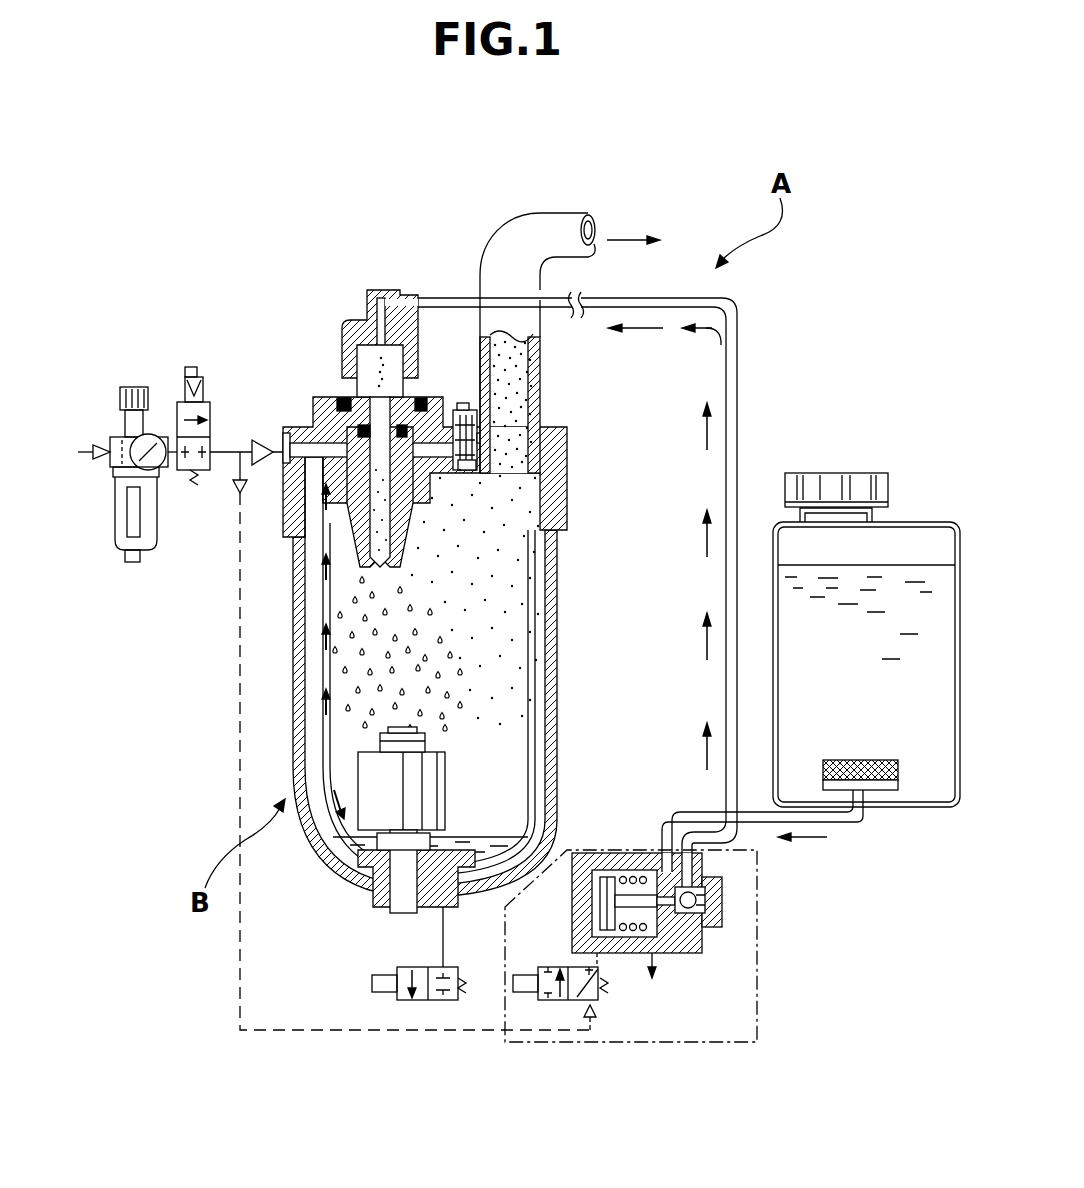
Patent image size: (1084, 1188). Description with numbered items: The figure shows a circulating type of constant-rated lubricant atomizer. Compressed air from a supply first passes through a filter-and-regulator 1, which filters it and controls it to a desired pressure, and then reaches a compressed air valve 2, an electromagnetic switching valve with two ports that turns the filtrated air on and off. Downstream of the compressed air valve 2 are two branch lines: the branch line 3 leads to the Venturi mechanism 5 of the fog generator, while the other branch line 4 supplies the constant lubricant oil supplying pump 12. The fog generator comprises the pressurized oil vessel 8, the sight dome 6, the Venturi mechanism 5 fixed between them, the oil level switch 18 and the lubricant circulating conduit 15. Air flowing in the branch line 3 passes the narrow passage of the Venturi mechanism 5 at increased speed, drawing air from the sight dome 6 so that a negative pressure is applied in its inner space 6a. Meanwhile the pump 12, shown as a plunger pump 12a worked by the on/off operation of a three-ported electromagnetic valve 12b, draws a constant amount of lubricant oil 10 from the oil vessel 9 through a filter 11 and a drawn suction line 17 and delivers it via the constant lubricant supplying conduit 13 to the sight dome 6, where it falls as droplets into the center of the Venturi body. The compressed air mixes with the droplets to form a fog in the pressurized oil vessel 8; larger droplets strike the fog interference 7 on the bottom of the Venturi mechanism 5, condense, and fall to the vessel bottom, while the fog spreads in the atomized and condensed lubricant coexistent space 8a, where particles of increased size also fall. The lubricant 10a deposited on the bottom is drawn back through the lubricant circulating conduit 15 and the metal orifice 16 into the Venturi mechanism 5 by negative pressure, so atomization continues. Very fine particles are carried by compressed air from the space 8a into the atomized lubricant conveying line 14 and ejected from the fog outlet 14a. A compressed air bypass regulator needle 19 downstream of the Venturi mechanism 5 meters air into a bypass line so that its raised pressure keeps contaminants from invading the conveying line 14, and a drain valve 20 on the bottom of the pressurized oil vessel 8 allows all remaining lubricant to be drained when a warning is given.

The filter-and-regulator 1 is at (150, 533).
The compressed air valve 2 is at (212, 386).
The branch line 3 is at (240, 447).
The branch line 4 is at (240, 672).
The Venturi mechanism 5 is at (548, 498).
The sight dome 6 is at (347, 326).
The inner space of the sight dome 6a is at (398, 351).
The fog interference 7 is at (378, 571).
The pressurized oil vessel 8 is at (552, 582).
The atomized and condensed lubricant coexistent space 8a is at (520, 622).
The oil vessel 9 is at (903, 522).
The lubricant oil 10 is at (818, 567).
The lubricant deposited on the bottom 10a is at (470, 838).
The filter 11 is at (858, 761).
The constant lubricant oil supplying pump 12 is at (758, 942).
The plunger pump 12a is at (703, 942).
The three-ported electromagnetic valve 12b is at (603, 999).
The constant lubricant supplying conduit 13 is at (742, 360).
The atomized lubricant conveying line 14 is at (502, 238).
The fog outlet 14a is at (597, 215).
The lubricant circulating conduit 15 is at (313, 633).
The metal orifice 16 is at (333, 406).
The suction pipe 17 is at (841, 824).
The oil level switch 18 is at (445, 756).
The compressed air bypass regulator needle 19 is at (468, 403).
The drain valve 20 is at (405, 967).